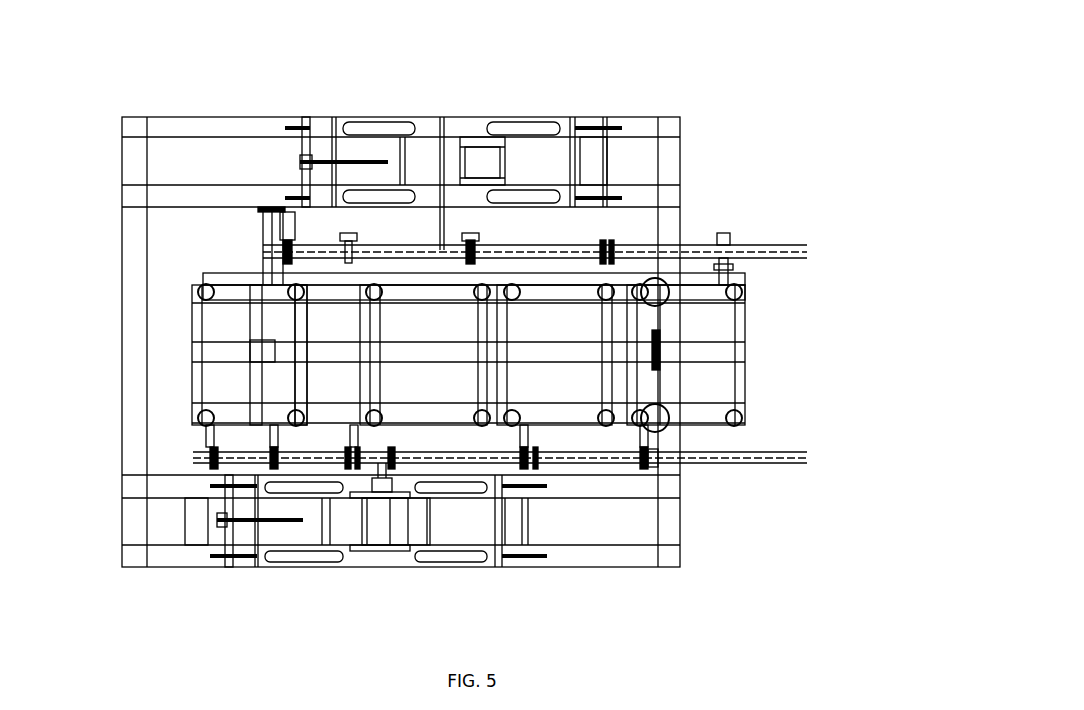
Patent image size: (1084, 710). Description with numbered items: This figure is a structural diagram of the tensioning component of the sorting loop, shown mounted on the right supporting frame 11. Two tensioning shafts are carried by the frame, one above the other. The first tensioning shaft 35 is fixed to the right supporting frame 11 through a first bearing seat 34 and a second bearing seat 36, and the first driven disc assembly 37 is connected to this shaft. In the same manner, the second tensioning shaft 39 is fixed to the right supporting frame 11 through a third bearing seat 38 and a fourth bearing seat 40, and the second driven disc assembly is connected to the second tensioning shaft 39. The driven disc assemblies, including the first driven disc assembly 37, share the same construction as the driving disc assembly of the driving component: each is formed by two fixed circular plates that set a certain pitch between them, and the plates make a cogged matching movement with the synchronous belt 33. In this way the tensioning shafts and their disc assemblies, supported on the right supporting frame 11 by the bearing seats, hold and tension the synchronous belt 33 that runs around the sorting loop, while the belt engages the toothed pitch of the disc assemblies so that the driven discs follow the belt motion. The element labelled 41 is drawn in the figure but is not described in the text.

The right supporting frame 11 is at (122, 162).
The synchronous belt 33 is at (748, 248).
The first bearing seat 34 is at (362, 556).
The first tensioning shaft 35 is at (378, 530).
The second bearing seat 36 is at (393, 488).
The first driven disc assembly 37 is at (235, 470).
The third bearing seat 38 is at (440, 128).
The second tensioning shaft 39 is at (455, 165).
The fourth bearing seat 40 is at (473, 190).
The upper shaft 41 is at (520, 250).